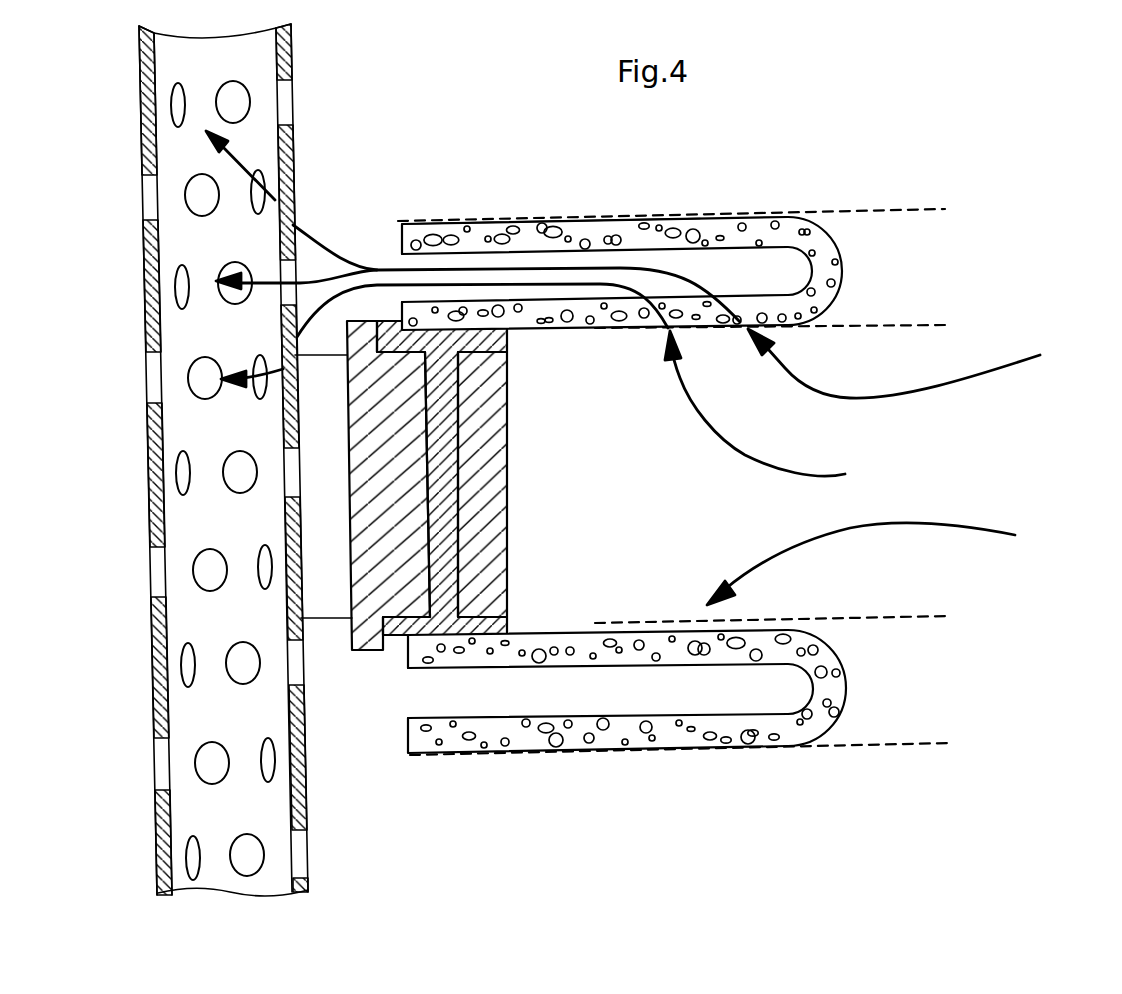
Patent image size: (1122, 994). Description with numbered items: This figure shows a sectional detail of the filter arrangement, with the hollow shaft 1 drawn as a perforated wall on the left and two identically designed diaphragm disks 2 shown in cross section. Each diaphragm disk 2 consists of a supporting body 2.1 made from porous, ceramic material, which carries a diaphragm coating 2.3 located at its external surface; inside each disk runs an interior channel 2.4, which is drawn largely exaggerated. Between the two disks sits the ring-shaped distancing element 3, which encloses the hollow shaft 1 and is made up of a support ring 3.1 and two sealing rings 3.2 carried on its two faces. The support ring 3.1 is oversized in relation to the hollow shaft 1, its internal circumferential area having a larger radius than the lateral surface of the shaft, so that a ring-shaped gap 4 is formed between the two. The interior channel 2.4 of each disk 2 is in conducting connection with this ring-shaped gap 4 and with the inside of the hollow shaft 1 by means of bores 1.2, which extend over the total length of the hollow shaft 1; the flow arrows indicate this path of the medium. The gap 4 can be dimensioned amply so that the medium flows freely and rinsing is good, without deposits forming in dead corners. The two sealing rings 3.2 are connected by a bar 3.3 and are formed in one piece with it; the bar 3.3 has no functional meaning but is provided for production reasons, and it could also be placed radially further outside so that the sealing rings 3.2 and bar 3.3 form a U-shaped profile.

The hollow shaft 1 is at (285, 56).
The bores 1.2 is at (183, 475).
The diaphragm disk 2 is at (674, 490).
The supporting body 2.1 is at (558, 240).
The diaphragm coating 2.3 is at (479, 222).
The interior channel 2.4 is at (528, 680).
The distancing element 3 is at (498, 477).
The support ring 3.1 is at (510, 400).
The sealing ring 3.2 is at (388, 318).
The bar 3.3 is at (452, 592).
The ring-shaped gap 4 is at (328, 484).